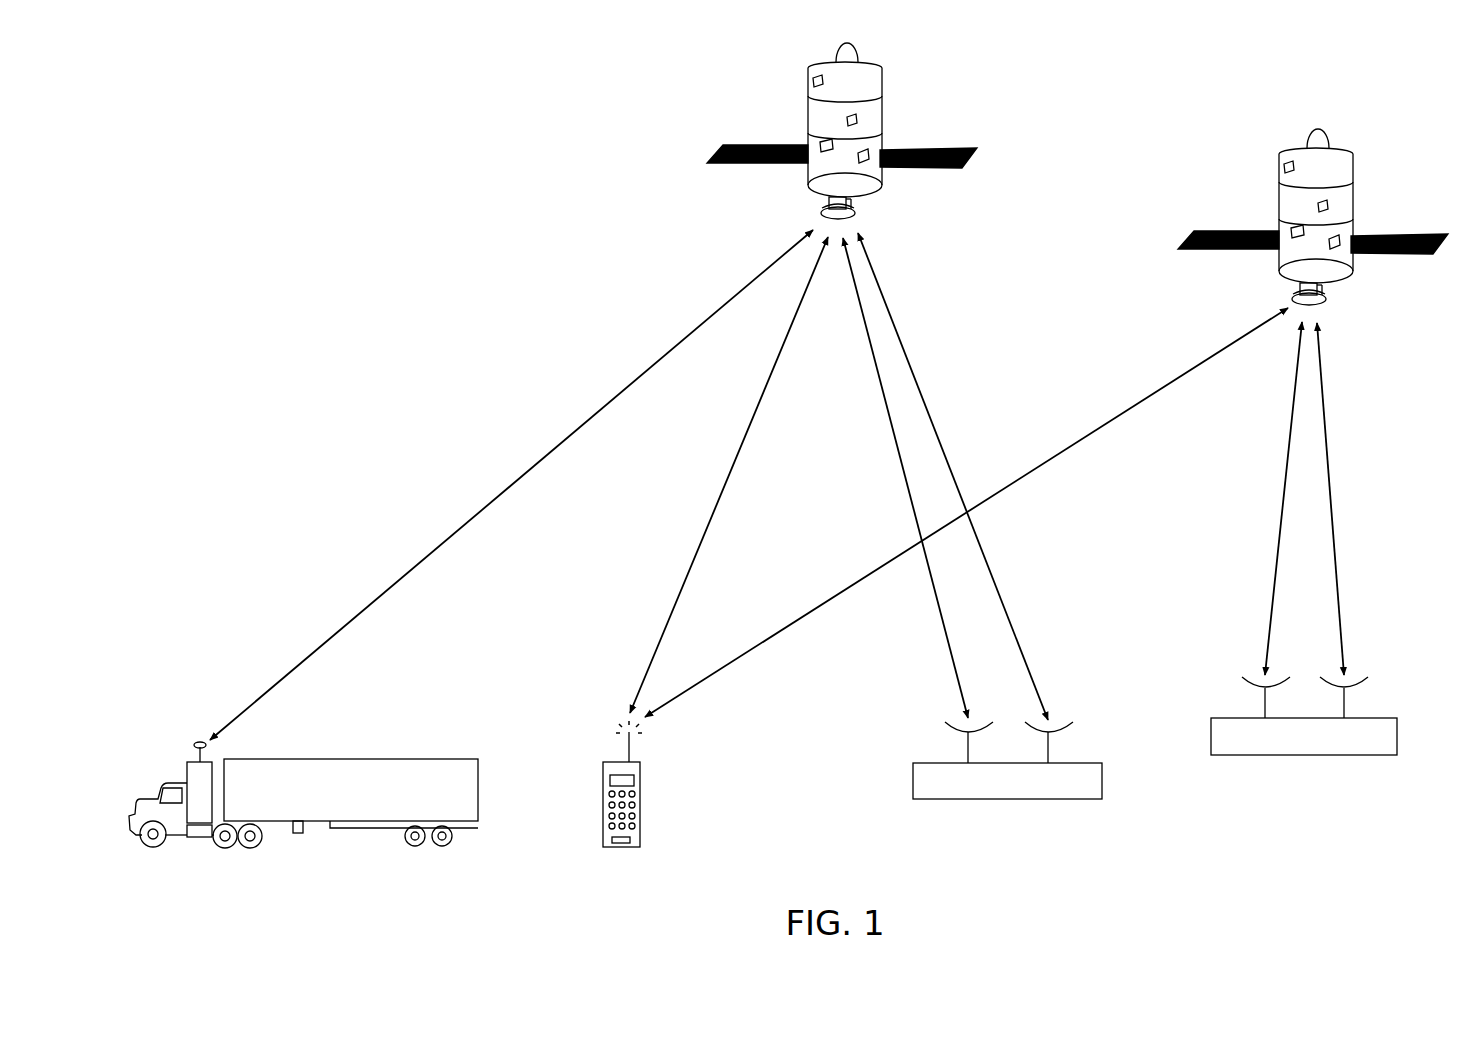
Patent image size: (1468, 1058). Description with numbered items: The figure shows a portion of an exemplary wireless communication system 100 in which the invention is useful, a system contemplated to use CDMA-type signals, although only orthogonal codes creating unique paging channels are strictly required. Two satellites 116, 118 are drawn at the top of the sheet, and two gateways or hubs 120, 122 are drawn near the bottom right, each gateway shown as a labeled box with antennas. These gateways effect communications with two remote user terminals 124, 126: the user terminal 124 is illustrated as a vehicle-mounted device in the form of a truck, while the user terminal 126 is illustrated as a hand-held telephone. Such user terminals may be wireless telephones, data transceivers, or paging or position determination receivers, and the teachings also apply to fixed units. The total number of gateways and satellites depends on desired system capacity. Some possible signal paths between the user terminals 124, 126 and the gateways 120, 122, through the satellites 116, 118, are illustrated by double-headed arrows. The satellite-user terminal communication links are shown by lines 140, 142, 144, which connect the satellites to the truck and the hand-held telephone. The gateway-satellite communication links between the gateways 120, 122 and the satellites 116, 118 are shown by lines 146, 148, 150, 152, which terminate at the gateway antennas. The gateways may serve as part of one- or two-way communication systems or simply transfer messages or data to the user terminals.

The communication system 100 is at (415, 307).
The satellite 116 is at (880, 72).
The satellite 118 is at (1350, 158).
The gateway 120 is at (913, 781).
The gateway 122 is at (1397, 738).
The user terminal 124 is at (355, 759).
The user terminal 126 is at (640, 835).
The satellite-user terminal communication link 140 is at (620, 393).
The satellite-user terminal communication link 142 is at (743, 438).
The satellite-user terminal communication link 144 is at (842, 588).
The gateway-satellite communication link 146 is at (892, 438).
The gateway-satellite communication link 148 is at (970, 348).
The gateway-satellite communication link 150 is at (1215, 455).
The gateway-satellite communication link 152 is at (1330, 458).